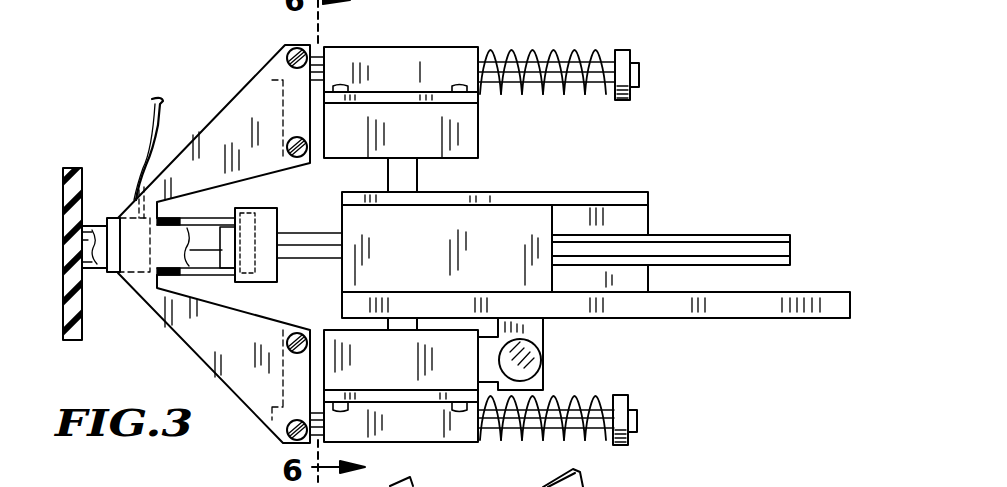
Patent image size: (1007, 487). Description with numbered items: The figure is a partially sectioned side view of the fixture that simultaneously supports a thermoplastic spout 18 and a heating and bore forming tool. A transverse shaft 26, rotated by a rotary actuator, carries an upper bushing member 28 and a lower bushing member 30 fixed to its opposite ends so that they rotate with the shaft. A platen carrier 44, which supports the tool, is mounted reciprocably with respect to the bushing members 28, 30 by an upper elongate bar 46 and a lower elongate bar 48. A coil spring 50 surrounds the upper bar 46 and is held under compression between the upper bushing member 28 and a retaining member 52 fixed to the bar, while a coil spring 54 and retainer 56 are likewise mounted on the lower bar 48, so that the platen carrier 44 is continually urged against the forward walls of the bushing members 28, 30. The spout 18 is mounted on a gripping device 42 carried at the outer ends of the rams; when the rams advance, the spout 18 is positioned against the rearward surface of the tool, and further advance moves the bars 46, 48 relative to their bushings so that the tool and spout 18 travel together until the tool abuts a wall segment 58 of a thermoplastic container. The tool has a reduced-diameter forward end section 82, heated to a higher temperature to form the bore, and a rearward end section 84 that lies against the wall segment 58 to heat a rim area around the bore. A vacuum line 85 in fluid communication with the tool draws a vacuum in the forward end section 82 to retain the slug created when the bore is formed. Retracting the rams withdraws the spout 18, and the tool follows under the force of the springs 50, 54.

The spout 18 is at (212, 268).
The transverse shaft 26 is at (405, 178).
The upper bushing member 28 is at (432, 62).
The lower bushing member 30 is at (436, 440).
The gripping device 42 is at (267, 222).
The platen carrier 44 is at (252, 100).
The upper elongate bar 46 is at (640, 72).
The lower elongate bar 48 is at (638, 420).
The coil spring 50 is at (558, 57).
The retaining member 52 is at (623, 100).
The coil spring 54 is at (583, 400).
The retainer 56 is at (622, 394).
The wall segment 58 is at (71, 206).
The forward end section 82 is at (98, 231).
The rearward end section 84 is at (117, 275).
The vacuum line 85 is at (152, 115).